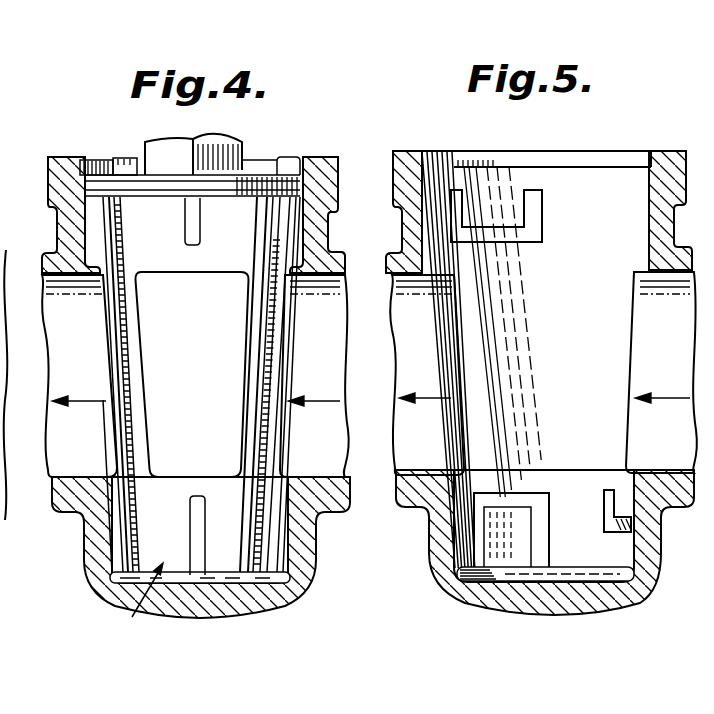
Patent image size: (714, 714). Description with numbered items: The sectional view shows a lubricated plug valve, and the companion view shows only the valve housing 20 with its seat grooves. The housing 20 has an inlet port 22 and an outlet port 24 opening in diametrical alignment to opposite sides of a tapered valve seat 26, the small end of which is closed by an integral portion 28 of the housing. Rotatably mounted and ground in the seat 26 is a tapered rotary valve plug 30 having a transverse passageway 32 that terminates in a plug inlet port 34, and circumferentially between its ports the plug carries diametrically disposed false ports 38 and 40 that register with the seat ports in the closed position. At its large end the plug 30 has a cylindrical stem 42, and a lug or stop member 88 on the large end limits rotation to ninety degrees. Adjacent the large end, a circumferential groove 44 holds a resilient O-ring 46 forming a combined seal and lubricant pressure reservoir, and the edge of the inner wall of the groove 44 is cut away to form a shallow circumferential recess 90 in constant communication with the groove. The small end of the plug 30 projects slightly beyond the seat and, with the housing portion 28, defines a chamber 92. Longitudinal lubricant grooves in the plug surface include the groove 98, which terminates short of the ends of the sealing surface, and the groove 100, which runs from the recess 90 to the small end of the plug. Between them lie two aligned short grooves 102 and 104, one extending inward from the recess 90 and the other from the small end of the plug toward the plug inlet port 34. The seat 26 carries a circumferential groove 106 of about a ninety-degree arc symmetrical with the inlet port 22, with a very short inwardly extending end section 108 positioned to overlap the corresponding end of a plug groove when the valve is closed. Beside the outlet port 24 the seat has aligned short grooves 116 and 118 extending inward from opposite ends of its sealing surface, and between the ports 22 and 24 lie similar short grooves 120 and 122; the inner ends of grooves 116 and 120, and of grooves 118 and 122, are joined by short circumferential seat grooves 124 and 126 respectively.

In FIG. 4, the valve housing 20 is at (50, 203).
In FIG. 5, the valve housing 20 is at (393, 192).
In FIG. 4, the inlet port 22 is at (314, 376).
In FIG. 5, the inlet port 22 is at (683, 470).
In FIG. 4, the outlet port 24 is at (104, 474).
In FIG. 5, the outlet port 24 is at (452, 470).
In FIG. 4, the tapered valve seat 26 is at (120, 535).
In FIG. 5, the tapered valve seat 26 is at (611, 182).
In FIG. 4, the integral portion of the housing 28 is at (217, 618).
In FIG. 5, the integral portion of the housing 28 is at (571, 617).
In FIG. 4, the tapered rotary valve plug 30 is at (135, 605).
In FIG. 4, the transverse passageway 32 is at (227, 309).
In FIG. 4, the plug inlet port 34 is at (146, 358).
In FIG. 4, the false port 38 is at (275, 343).
In FIG. 4, the false port 40 is at (110, 343).
In FIG. 4, the cylindrical stem 42 is at (236, 139).
In FIG. 4, the circumferential groove 44 is at (122, 186).
In FIG. 4, the O-ring 46 is at (103, 187).
In FIG. 4, the stop member 88 is at (288, 160).
In FIG. 4, the circumferential recess 90 is at (145, 195).
In FIG. 4, the chamber 92 is at (177, 583).
In FIG. 4, the lubricant groove 98 is at (267, 368).
In FIG. 4, the plug groove 100 is at (120, 377).
In FIG. 4, the short groove 102 is at (185, 226).
In FIG. 4, the short groove 104 is at (193, 533).
In FIG. 4, the seat groove 106 is at (289, 525).
In FIG. 5, the seat groove 106 is at (631, 528).
In FIG. 5, the inwardly extending section 108 is at (606, 500).
In FIG. 5, the short seat groove 116 is at (454, 207).
In FIG. 5, the short seat groove 118 is at (479, 537).
In FIG. 5, the short seat groove 120 is at (536, 205).
In FIG. 5, the short seat groove 122 is at (537, 533).
In FIG. 5, the circumferentially extending seat groove 124 is at (494, 232).
In FIG. 5, the circumferentially extending seat groove 126 is at (537, 475).